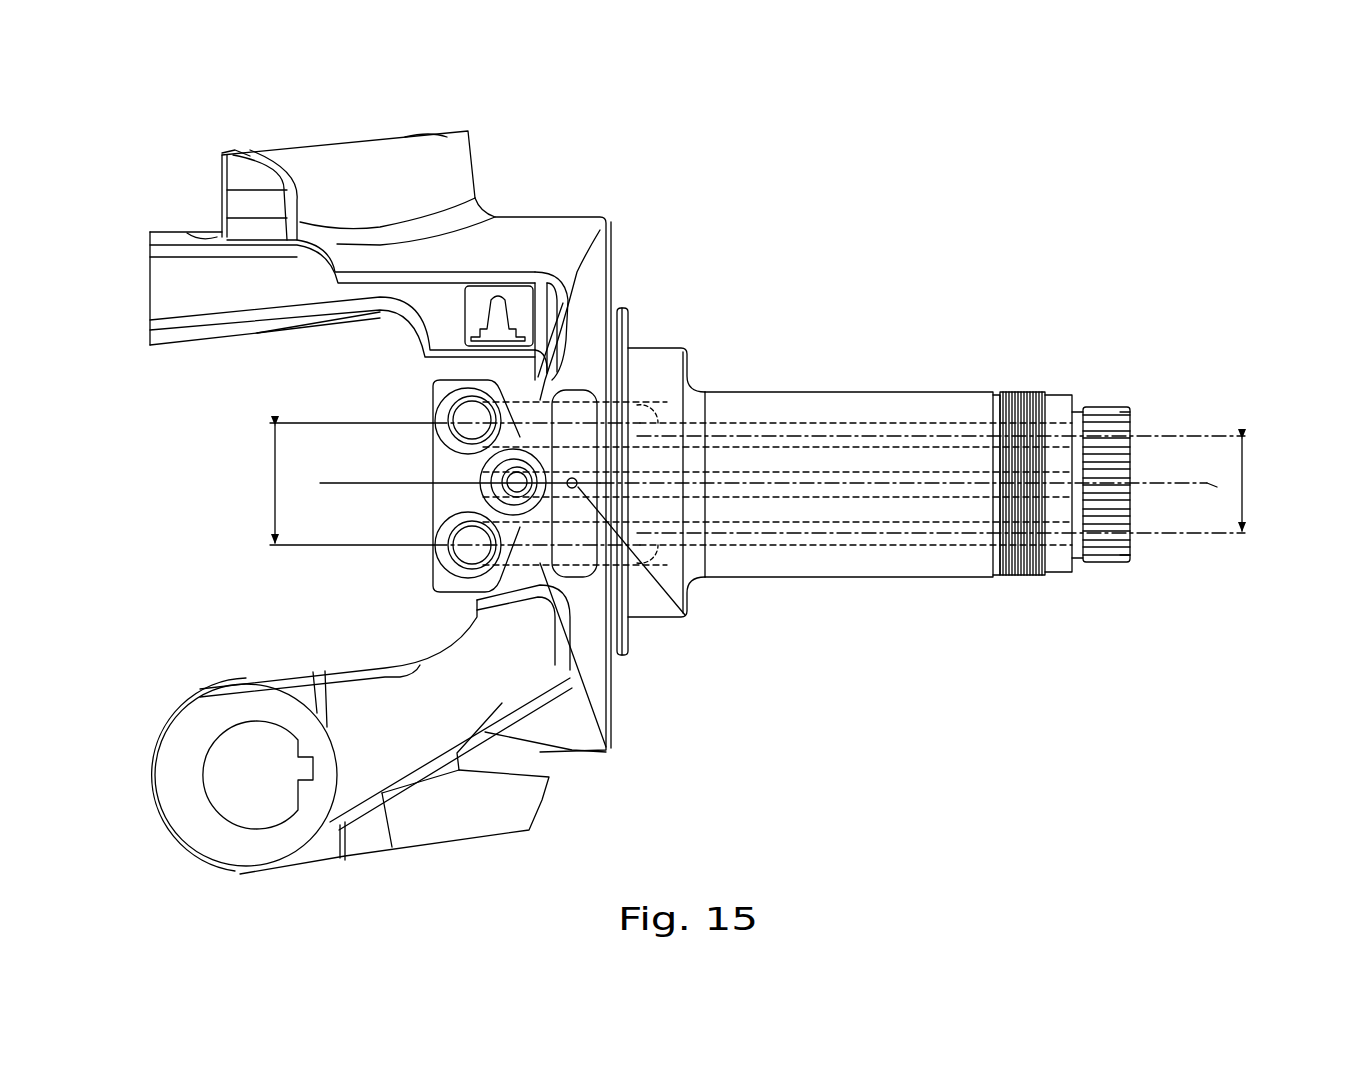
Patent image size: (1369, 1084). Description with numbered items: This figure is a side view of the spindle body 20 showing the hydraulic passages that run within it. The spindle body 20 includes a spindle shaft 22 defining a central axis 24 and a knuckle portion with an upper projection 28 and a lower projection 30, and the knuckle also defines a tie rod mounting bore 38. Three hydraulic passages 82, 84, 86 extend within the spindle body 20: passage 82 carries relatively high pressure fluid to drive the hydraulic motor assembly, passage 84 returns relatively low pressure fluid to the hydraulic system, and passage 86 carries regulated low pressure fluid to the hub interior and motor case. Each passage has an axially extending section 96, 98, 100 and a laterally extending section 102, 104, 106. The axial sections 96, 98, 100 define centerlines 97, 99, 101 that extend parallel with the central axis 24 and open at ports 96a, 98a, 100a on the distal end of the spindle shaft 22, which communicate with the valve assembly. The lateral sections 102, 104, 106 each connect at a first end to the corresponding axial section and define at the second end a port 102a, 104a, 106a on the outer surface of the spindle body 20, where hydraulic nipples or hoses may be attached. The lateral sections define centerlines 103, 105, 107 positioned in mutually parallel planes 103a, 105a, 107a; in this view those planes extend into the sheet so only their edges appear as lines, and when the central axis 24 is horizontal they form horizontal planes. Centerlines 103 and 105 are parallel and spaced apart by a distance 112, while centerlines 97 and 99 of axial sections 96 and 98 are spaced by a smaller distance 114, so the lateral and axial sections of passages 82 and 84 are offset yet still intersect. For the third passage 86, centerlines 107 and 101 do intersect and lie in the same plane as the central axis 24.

The spindle body 20 is at (581, 163).
The spindle shaft 22 is at (935, 390).
The central axis 24 is at (1217, 485).
The upper projection 28 is at (335, 160).
The lower projection 30 is at (432, 823).
The tie rod mounting bore 38 is at (207, 757).
The hydraulic passage 82 is at (877, 430).
The hydraulic passage 84 is at (900, 545).
The hydraulic passage 86 is at (930, 488).
The axially extending section 96 is at (775, 422).
The port 96a is at (1130, 427).
The centerline 97 is at (1227, 432).
The axially extending section 98 is at (825, 533).
The port 98a is at (1147, 537).
The centerline 99 is at (1190, 537).
The axially extending section 100 is at (820, 484).
The port 100a is at (1130, 492).
The centerline 101 is at (1210, 487).
The laterally extending section 102 is at (533, 410).
The port 102a is at (433, 395).
The centerline 103 is at (567, 420).
The plane 103a is at (465, 413).
The laterally extending section 104 is at (563, 610).
The port 104a is at (437, 570).
The centerline 105 is at (573, 547).
The plane 105a is at (463, 557).
The laterally extending section 106 is at (583, 475).
The port 106a is at (480, 473).
The centerline 107 is at (640, 570).
The plane 107a is at (435, 487).
The distance 112 is at (275, 483).
The distance 114 is at (1243, 487).